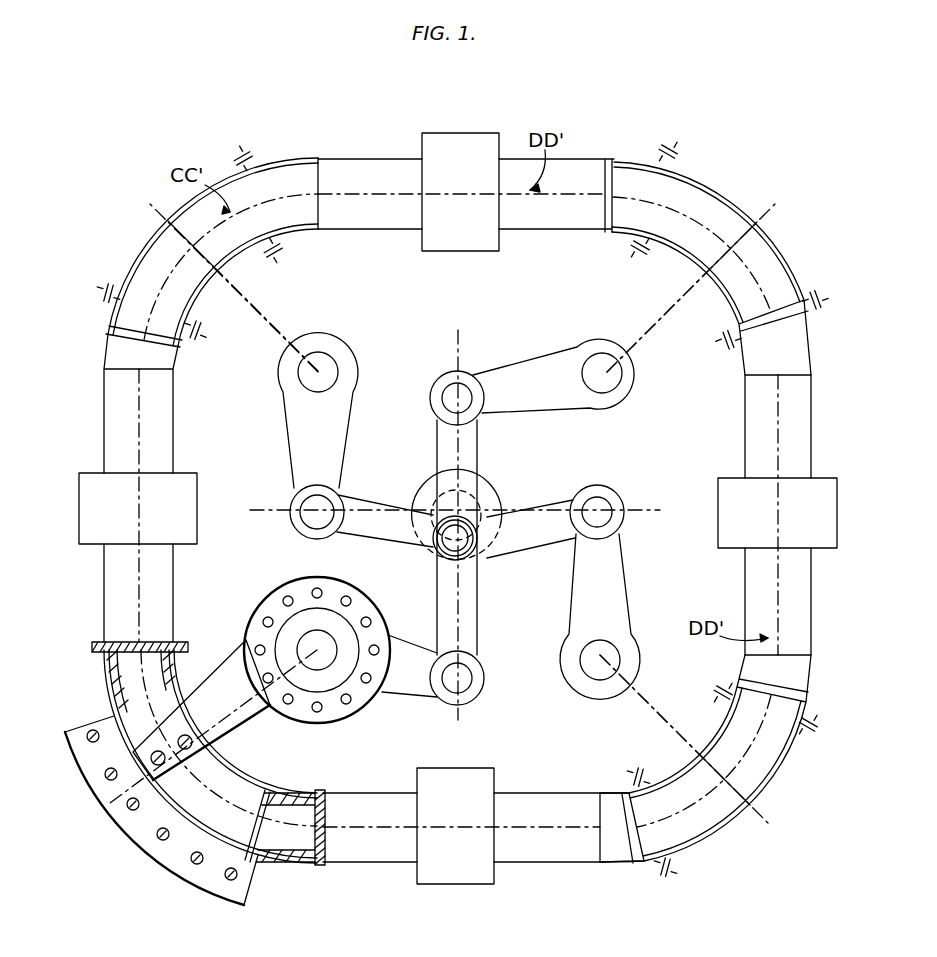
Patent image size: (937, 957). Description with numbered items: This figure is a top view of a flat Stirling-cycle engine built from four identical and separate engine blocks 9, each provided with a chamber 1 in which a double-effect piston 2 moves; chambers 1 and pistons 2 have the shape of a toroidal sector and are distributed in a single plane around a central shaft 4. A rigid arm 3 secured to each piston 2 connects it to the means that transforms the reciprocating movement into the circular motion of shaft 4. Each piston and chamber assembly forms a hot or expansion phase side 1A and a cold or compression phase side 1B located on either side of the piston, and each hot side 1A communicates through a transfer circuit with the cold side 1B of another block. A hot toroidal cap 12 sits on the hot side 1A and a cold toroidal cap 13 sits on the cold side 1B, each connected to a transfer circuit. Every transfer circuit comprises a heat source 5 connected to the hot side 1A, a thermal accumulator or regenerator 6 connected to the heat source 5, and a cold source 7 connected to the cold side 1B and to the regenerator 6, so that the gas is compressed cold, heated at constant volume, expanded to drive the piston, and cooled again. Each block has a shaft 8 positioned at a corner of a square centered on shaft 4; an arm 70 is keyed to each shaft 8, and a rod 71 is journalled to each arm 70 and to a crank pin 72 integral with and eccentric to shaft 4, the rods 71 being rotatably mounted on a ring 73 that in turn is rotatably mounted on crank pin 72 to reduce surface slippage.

The chamber 1 is at (710, 808).
The hot or expansion phase side 1A is at (105, 662).
The cold or compression phase side 1B is at (300, 858).
The double-effect piston 2 is at (696, 206).
The rigid arm 3 is at (160, 790).
The shaft 4 is at (490, 484).
The heat source 5 is at (155, 594).
The thermal accumulator or regenerator 6 is at (155, 523).
The cold source 7 is at (148, 423).
The shaft 8 is at (332, 368).
The engine block 9 is at (158, 212).
The hot toroidal cap 12 is at (95, 645).
The cold toroidal cap 13 is at (322, 870).
The arm 70 is at (333, 441).
The rod 71 is at (372, 522).
The crank pin 72 is at (478, 540).
The ring 73 is at (466, 552).